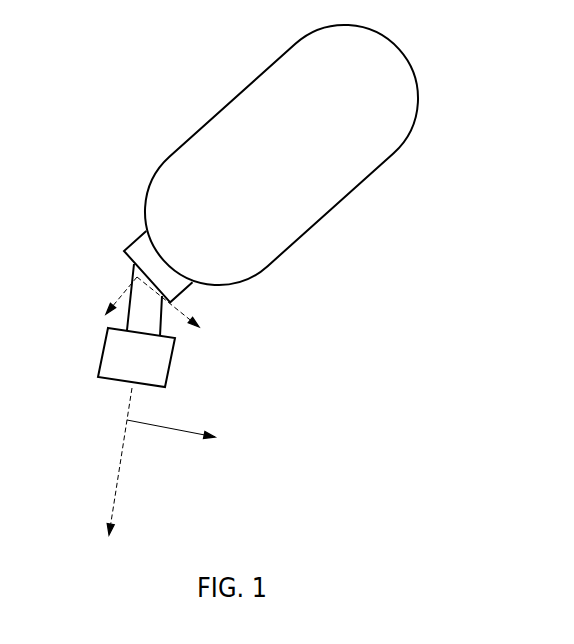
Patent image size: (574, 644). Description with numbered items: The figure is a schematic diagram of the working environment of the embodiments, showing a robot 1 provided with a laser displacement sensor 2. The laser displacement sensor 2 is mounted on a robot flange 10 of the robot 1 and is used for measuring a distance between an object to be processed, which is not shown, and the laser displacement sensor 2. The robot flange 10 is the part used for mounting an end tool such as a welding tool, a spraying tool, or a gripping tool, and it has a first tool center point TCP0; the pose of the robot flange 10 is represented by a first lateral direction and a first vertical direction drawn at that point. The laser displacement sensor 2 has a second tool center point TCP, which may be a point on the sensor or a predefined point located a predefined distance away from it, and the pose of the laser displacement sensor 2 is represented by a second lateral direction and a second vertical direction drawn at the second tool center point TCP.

The robot 1 is at (183, 150).
The robot flange 10 is at (140, 247).
The laser displacement sensor 2 is at (112, 363).
The first tool center point TCP0 is at (141, 279).
The second tool center point TCP is at (127, 420).